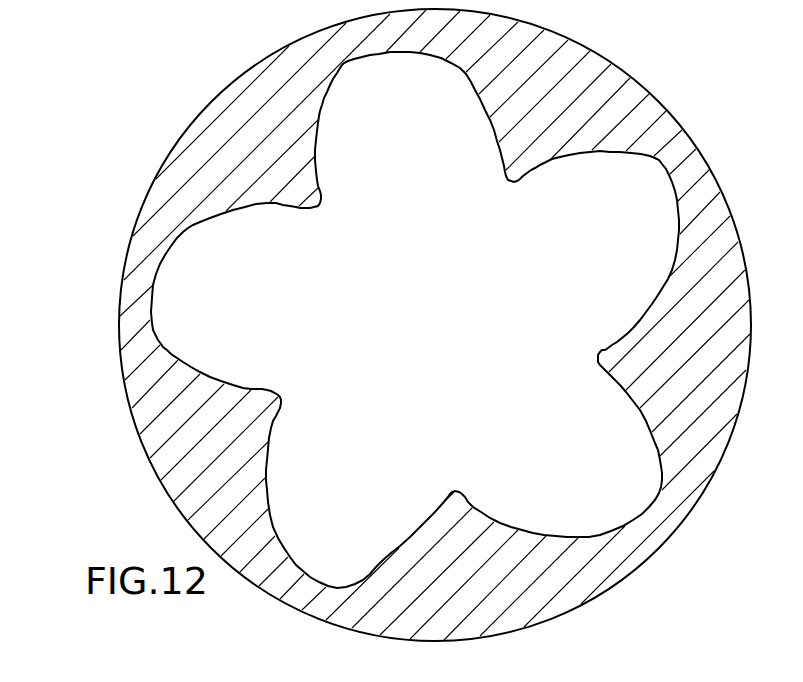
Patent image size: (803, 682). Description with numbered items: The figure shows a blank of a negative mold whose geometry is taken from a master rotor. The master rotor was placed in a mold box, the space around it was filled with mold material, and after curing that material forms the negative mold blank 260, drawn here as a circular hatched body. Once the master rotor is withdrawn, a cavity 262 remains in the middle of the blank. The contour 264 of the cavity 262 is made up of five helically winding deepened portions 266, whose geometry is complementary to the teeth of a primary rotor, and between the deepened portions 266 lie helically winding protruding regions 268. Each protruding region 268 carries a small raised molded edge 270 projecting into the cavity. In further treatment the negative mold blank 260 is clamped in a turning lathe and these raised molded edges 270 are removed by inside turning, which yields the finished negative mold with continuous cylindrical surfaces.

The negative mold blank 260 is at (120, 449).
The cavity 262 is at (458, 336).
The contour 264 is at (277, 430).
The deepened portions 266 is at (406, 107).
The protruding regions 268 is at (527, 157).
The raised molded edges 270 is at (513, 187).